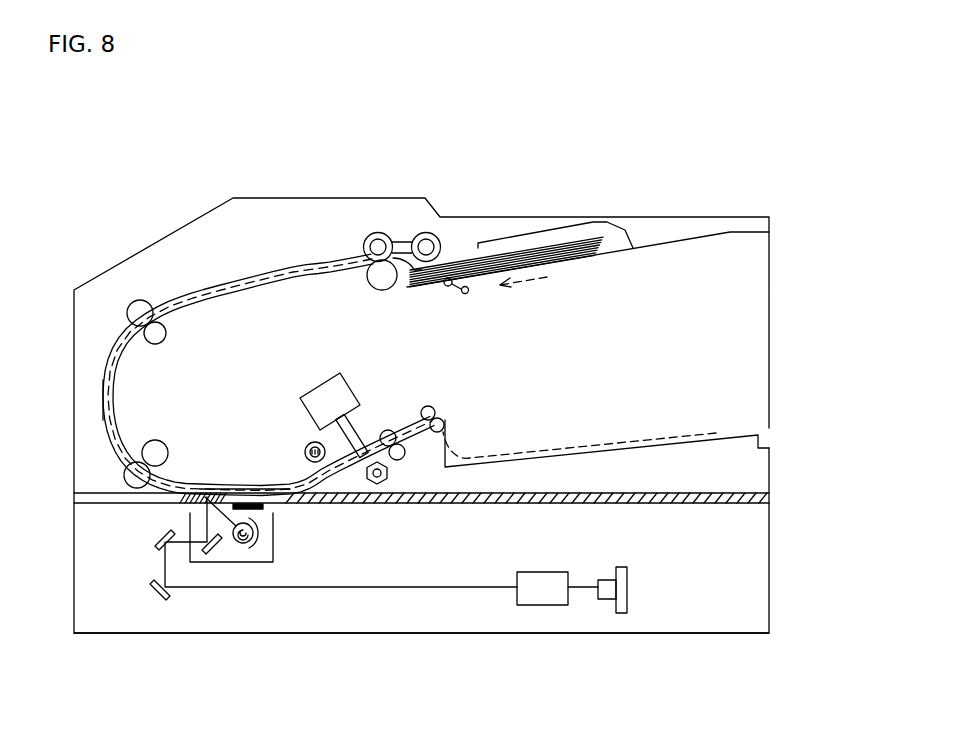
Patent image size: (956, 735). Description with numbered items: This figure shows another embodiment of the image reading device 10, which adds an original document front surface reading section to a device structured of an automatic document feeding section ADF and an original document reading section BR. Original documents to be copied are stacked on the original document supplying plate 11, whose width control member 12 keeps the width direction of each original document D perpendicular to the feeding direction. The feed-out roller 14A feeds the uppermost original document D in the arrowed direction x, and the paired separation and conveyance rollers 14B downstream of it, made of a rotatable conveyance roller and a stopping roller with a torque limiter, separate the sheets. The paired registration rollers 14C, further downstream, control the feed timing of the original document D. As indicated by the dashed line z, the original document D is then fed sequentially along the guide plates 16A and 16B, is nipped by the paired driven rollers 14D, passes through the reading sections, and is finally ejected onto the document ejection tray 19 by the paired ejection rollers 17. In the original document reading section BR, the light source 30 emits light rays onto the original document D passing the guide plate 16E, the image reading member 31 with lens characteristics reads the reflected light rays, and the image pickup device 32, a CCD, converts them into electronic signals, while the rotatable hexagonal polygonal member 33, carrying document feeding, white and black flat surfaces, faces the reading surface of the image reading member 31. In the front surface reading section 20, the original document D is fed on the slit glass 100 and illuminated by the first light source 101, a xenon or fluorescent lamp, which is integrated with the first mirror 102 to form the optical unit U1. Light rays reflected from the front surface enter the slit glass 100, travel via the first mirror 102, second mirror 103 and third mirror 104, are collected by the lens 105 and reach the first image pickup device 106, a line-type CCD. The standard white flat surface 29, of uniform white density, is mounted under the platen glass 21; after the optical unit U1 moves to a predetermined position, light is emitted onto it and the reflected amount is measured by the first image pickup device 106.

The image reading device 10 is at (777, 206).
The original document supplying plate 11 is at (660, 240).
The width control member 12 is at (592, 226).
The feed-out roller 14A is at (428, 233).
The paired separation and conveyance rollers 14B is at (368, 236).
The paired registration rollers 14C is at (130, 301).
The paired driven rollers 14D is at (125, 470).
The guide plate 16A is at (190, 290).
The guide plate 16B is at (103, 402).
The guide plate 16E is at (340, 494).
The paired ejection rollers 17 is at (435, 407).
The document ejection tray 19 is at (728, 437).
The original document reading section 20 is at (777, 631).
The platen glass 21 is at (658, 504).
The standard white flat surface 29 is at (250, 504).
The light source 30 is at (308, 448).
The image reading member 31 is at (356, 414).
The image pickup device 32 is at (352, 389).
The polygonal member 33 is at (388, 471).
The slit glass 100 is at (200, 493).
The first light source 101 is at (257, 543).
The first mirror 102 is at (215, 548).
The second mirror 103 is at (158, 533).
The third mirror 104 is at (160, 598).
The lens 105 is at (545, 606).
The first image pickup device 106 is at (607, 600).
The automatic document feeding section ADF is at (777, 336).
The original document reading section BR is at (432, 373).
The optical unit U1 is at (275, 572).
The original document D is at (515, 250).
The arrowed direction X x is at (533, 278).
The dashed line Z z is at (250, 283).